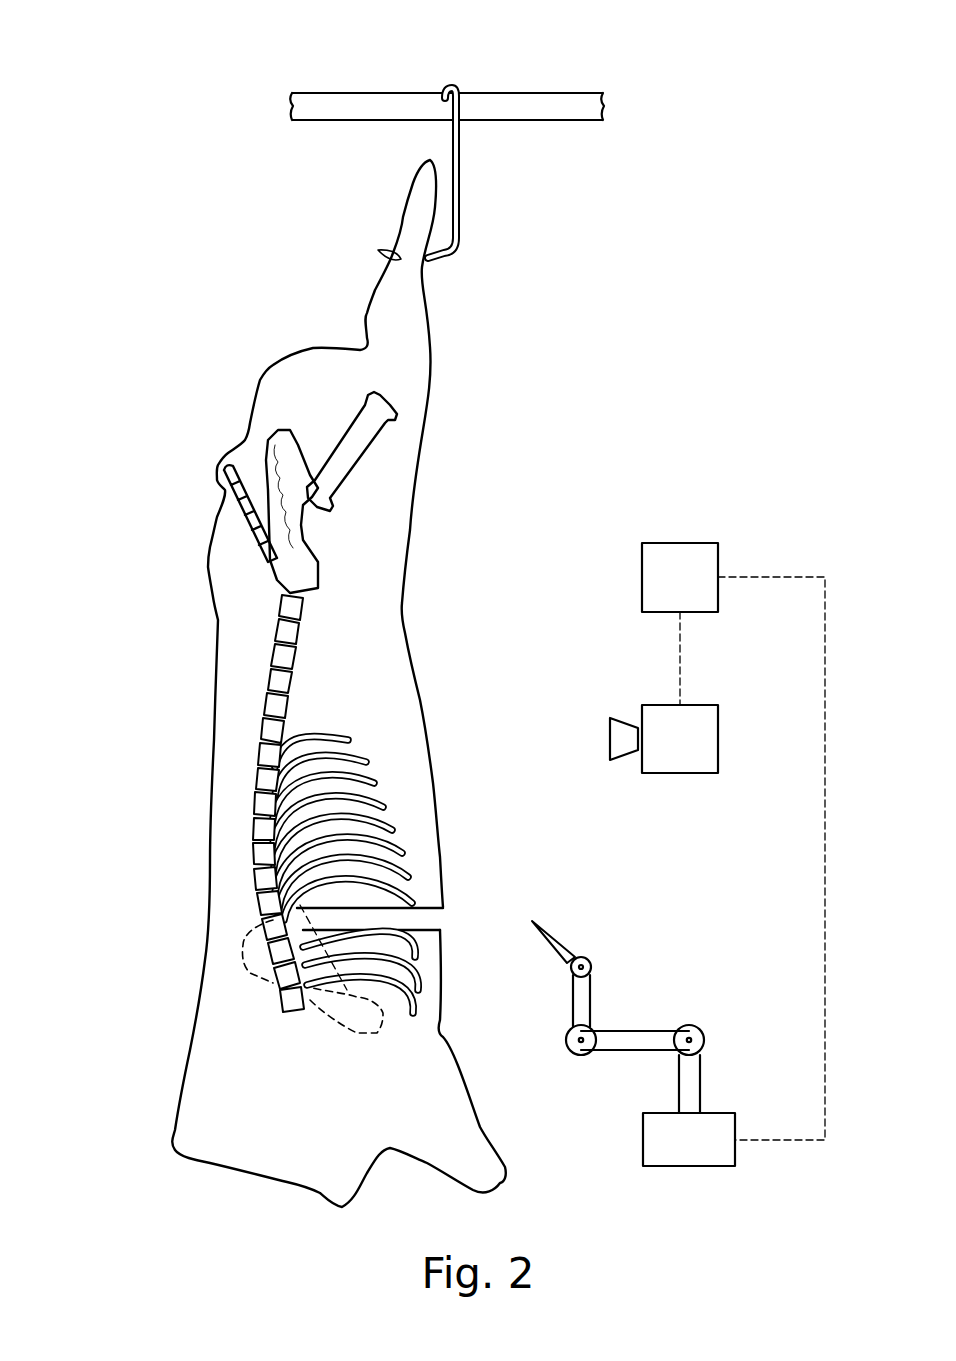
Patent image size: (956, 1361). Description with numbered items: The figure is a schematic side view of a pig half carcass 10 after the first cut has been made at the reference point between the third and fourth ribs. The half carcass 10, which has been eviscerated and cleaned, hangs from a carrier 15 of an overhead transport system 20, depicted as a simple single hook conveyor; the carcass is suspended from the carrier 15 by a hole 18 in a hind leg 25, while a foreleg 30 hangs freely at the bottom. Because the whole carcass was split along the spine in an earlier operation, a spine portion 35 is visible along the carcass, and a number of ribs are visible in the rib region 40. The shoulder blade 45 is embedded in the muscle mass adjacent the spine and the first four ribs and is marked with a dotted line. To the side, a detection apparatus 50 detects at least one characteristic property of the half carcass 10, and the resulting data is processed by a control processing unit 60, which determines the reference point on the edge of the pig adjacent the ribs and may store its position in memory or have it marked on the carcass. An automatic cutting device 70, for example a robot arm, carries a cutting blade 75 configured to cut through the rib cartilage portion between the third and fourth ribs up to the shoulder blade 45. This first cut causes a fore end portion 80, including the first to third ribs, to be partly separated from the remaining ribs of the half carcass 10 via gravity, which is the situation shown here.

The pig half carcass 10 is at (503, 594).
The carrier 15 is at (462, 150).
The hole 18 is at (380, 248).
The overhead transport system 20 is at (567, 110).
The hind leg 25 is at (410, 287).
The foreleg 30 is at (470, 1135).
The spine portion 35 is at (275, 653).
The rib region 40 is at (197, 757).
The shoulder blade 45 is at (245, 965).
The detection apparatus 50 is at (664, 739).
The control processing unit 60 is at (680, 577).
The automatic cutting device 70 is at (717, 1030).
The cutting blade 75 is at (570, 955).
The fore end portion 80 is at (105, 953).